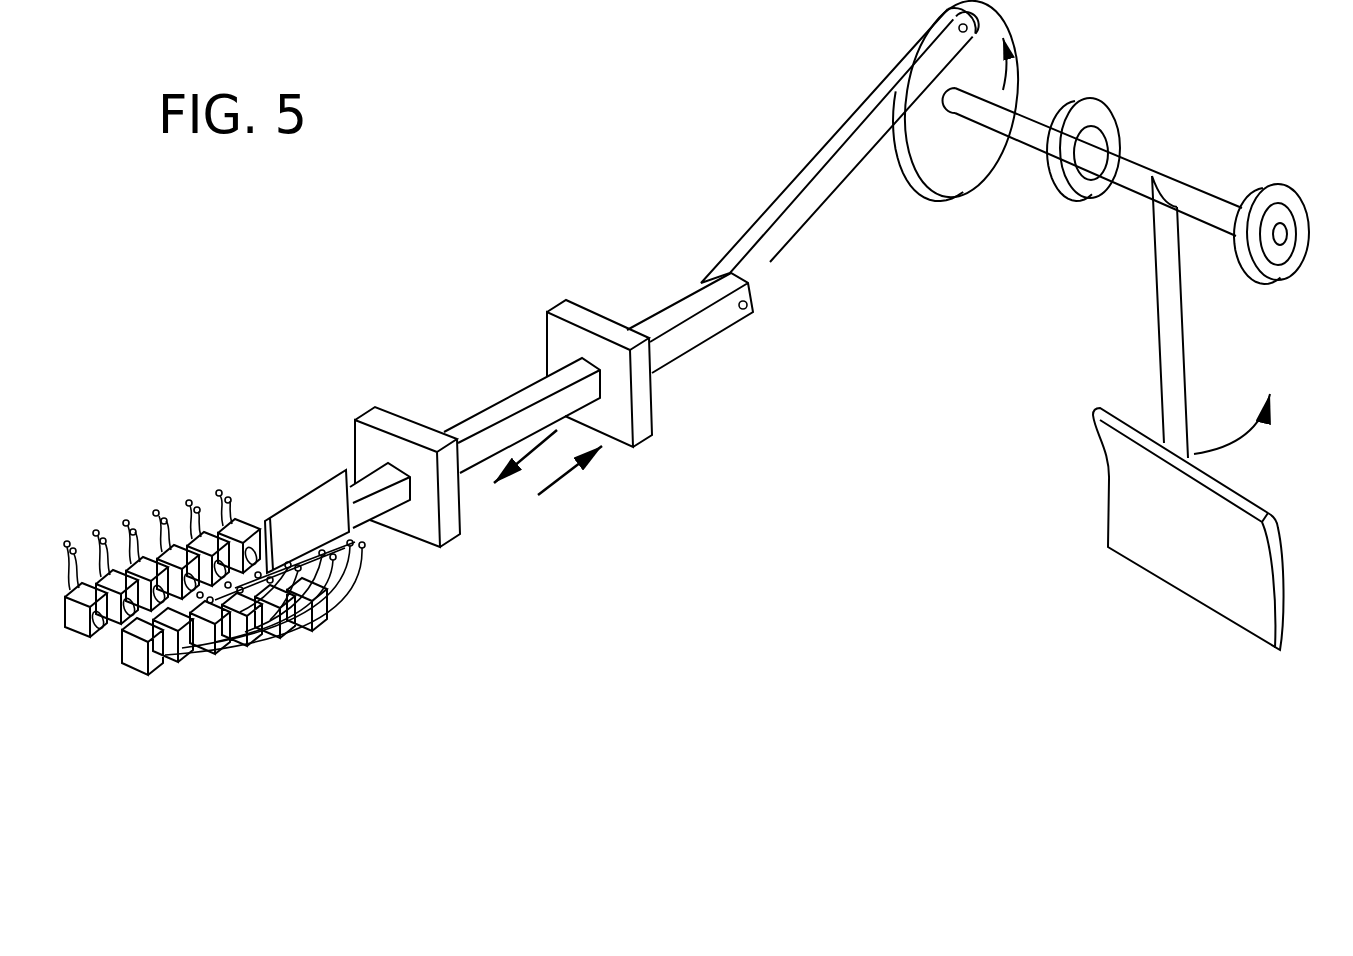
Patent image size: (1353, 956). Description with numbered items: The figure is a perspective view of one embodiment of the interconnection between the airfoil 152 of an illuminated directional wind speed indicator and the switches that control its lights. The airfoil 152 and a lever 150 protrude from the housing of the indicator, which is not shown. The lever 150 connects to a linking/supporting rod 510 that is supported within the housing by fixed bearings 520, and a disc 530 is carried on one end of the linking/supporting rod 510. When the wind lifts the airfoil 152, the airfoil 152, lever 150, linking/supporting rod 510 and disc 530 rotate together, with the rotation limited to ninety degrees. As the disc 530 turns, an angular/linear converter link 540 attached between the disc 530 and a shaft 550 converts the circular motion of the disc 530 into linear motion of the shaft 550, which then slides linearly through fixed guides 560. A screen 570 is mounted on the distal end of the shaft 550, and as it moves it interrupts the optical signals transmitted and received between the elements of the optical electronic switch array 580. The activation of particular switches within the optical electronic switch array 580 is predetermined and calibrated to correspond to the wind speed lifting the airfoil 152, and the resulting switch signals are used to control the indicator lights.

The lever 150 is at (1189, 350).
The airfoil 152 is at (1177, 582).
The linking/supporting rod 510 is at (1130, 185).
The fixed bearings 520 is at (1271, 188).
The disc 530 is at (973, 143).
The angular/linear converter link 540 is at (820, 155).
The shaft 550 is at (701, 342).
The fixed guides 560 is at (543, 331).
The screen 570 is at (294, 502).
The optical electronic switch array 580 is at (208, 672).